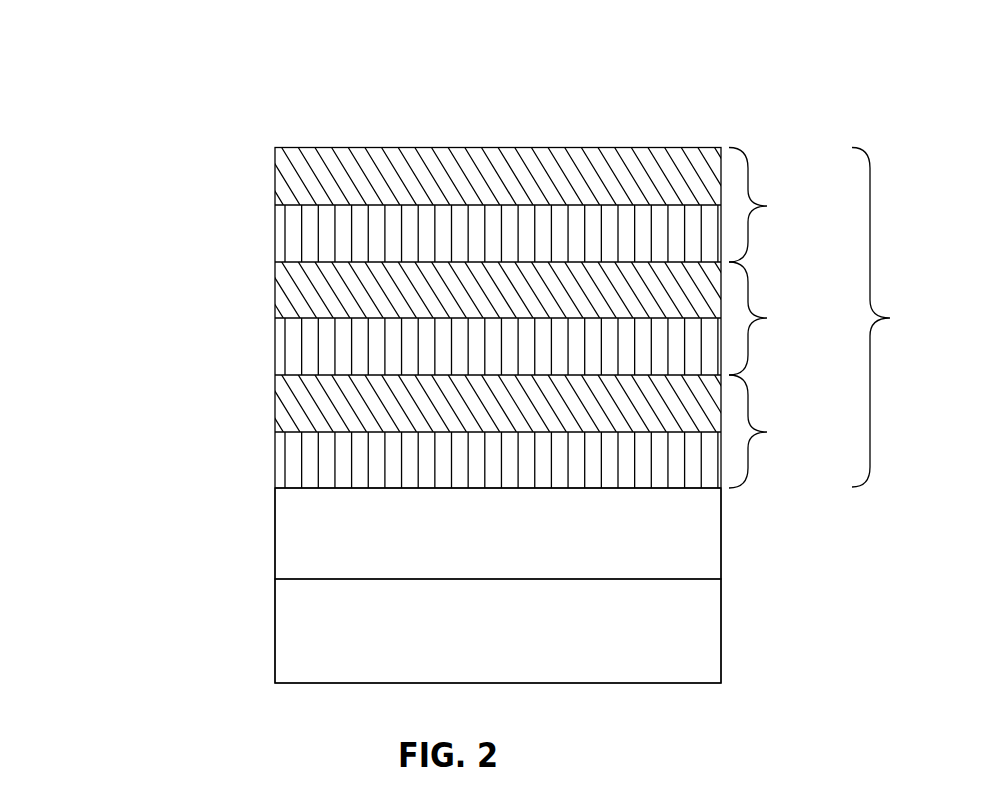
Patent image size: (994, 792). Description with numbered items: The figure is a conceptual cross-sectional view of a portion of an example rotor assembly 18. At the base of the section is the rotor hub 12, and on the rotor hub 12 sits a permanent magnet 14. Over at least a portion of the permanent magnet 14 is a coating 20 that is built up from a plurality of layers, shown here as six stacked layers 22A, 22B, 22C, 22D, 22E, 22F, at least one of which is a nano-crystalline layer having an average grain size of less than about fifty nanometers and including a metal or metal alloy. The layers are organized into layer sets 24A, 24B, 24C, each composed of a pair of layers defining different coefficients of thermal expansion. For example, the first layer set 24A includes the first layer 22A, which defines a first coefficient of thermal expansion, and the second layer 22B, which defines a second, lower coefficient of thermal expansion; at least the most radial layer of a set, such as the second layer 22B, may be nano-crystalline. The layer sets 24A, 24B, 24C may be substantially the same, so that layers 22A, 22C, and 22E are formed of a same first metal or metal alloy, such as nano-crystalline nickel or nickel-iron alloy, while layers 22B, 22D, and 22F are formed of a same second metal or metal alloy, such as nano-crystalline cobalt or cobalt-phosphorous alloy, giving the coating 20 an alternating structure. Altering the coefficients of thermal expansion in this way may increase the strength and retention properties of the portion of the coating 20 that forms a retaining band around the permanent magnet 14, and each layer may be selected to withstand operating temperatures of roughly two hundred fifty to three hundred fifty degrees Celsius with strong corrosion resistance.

The rotor hub 12 is at (275, 643).
The permanent magnet 14 is at (275, 549).
The rotor assembly 18 is at (763, 118).
The coating 20 is at (896, 318).
The first layer 22A is at (275, 465).
The second layer 22B is at (275, 400).
The layer 22C is at (275, 353).
The layer 22D is at (275, 303).
The layer 22E is at (275, 250).
The layer 22F is at (275, 193).
The first layer set 24A is at (783, 431).
The layer set 24B is at (783, 318).
The layer set 24C is at (783, 205).